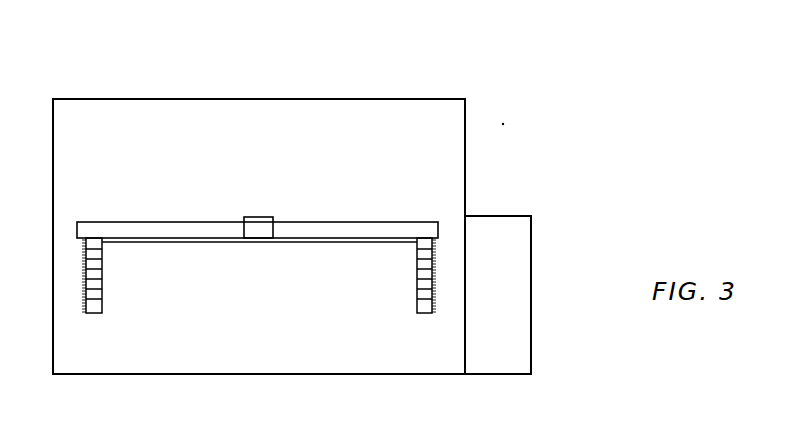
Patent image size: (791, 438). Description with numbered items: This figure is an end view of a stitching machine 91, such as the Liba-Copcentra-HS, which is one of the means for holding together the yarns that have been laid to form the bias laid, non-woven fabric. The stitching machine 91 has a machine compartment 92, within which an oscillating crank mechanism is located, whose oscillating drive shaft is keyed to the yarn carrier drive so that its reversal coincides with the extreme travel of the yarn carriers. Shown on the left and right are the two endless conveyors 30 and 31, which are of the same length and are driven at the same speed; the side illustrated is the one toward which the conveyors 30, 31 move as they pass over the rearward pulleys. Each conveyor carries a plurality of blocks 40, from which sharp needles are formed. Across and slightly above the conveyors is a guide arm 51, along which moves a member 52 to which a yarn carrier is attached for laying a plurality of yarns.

The stitching machine 91 is at (156, 96).
The machine compartment 92 is at (538, 244).
The guide arm 51 is at (314, 230).
The member 52 is at (255, 231).
The endless conveyor 30 is at (98, 316).
The endless conveyor 31 is at (422, 317).
The blocks 40 is at (102, 288).